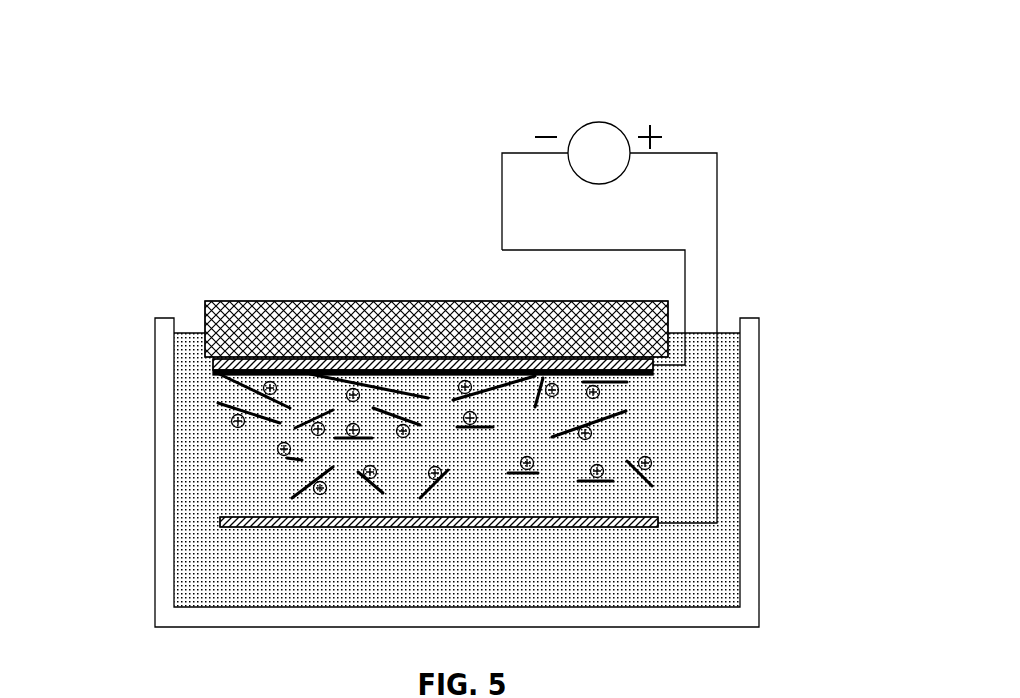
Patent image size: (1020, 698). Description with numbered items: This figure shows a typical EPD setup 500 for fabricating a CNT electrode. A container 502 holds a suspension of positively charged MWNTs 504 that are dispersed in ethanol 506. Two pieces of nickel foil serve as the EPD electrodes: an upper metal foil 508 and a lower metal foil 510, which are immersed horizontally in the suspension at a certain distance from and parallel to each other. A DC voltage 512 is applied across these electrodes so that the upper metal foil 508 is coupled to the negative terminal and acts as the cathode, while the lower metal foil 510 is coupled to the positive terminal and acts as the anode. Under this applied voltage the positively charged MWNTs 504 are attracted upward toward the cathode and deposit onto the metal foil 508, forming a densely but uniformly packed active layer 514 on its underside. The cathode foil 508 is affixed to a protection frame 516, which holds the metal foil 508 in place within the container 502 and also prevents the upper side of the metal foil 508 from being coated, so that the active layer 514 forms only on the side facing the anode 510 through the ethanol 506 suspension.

The EPD setup 500 is at (447, 50).
The container 502 is at (759, 333).
The MWNTs 504 is at (627, 411).
The ethanol 506 is at (457, 470).
The metal foil (cathode) 508 is at (213, 365).
The metal foil (anode) 510 is at (220, 522).
The DC voltage 512 is at (599, 184).
The active layer 514 is at (653, 374).
The protection frame 516 is at (330, 301).